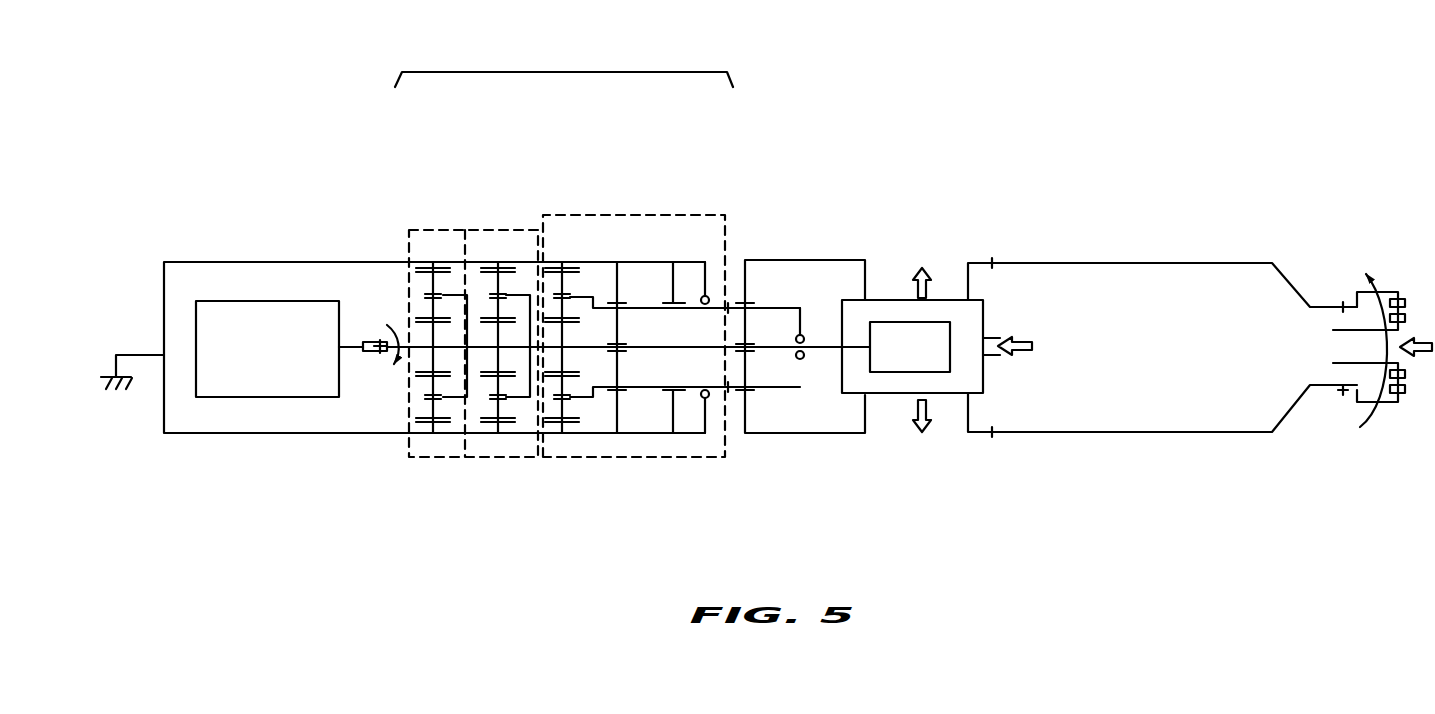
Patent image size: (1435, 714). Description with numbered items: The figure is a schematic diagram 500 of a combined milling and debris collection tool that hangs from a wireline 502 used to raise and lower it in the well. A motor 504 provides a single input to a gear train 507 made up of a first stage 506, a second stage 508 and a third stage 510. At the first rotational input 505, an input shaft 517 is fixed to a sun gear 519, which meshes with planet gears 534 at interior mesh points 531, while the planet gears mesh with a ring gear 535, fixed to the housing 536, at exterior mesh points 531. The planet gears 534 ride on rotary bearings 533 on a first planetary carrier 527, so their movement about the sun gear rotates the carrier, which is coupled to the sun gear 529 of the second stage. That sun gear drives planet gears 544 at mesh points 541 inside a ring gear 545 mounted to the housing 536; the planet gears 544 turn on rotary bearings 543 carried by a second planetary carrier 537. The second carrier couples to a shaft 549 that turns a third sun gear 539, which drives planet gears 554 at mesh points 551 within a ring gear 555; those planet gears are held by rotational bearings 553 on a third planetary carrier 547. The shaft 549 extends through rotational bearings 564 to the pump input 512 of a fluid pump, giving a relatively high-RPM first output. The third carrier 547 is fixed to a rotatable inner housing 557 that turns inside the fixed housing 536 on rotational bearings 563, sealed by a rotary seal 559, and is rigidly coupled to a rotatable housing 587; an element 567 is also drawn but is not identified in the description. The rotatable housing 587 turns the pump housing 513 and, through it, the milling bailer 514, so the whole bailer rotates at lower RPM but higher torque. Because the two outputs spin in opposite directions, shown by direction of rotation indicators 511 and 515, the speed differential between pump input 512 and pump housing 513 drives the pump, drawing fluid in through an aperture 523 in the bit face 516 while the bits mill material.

The diagram 500 is at (196, 104).
The wireline 502 is at (148, 354).
The motor 504 is at (254, 301).
The first rotational input 505 is at (361, 337).
The first stage 506 is at (428, 262).
The gear train 507 is at (565, 72).
The second stage 508 is at (507, 230).
The third stage 510 is at (711, 217).
The direction of rotation indicator 511 is at (697, 367).
The fluid pump input 512 is at (922, 267).
The fluid pump housing 513 is at (940, 299).
The milling bailer 514 is at (1068, 262).
The direction of rotation indicator 515 is at (1380, 290).
The bit face 516 is at (1394, 412).
The input shaft 517 is at (386, 357).
The sun gear 519 is at (432, 359).
The aperture 523 is at (1354, 354).
The first planetary carrier 527 is at (428, 440).
The sun gear 529 is at (451, 408).
The mesh points 531 is at (436, 277).
The rotary bearing 533 is at (426, 413).
The planet gears 534 is at (436, 262).
The ring gear 535 is at (432, 437).
The housing 536 is at (217, 434).
The second planetary carrier 537 is at (523, 408).
The third sun gear 539 is at (561, 363).
The mesh points 541 is at (492, 262).
The rotary bearings 543 is at (494, 408).
The planet gears 544 is at (502, 277).
The ring gear 545 is at (498, 438).
The third planetary carrier 547 is at (590, 408).
The shaft 549 is at (651, 345).
The mesh points 551 is at (563, 262).
The rotational bearings 553 is at (571, 277).
The planet gears 554 is at (564, 415).
The ring gear 555 is at (562, 448).
The rotatable inner housing 557 is at (690, 299).
The rotary seal 559 is at (708, 297).
The rotational bearings 563 is at (613, 393).
The rotational bearings 564 is at (625, 353).
The terminal 567 is at (801, 362).
The rotatable housing 587 is at (780, 434).